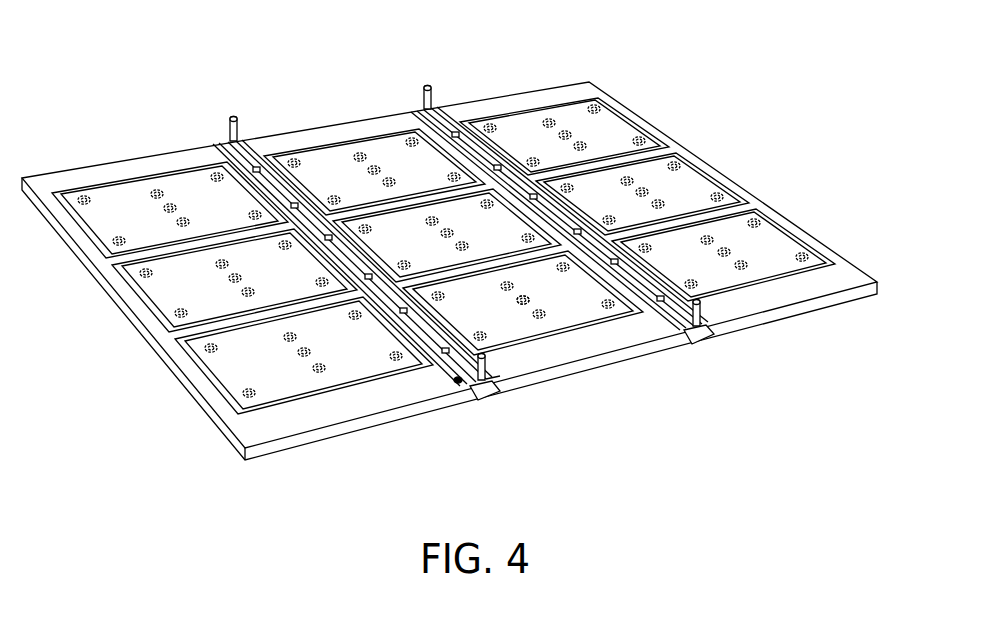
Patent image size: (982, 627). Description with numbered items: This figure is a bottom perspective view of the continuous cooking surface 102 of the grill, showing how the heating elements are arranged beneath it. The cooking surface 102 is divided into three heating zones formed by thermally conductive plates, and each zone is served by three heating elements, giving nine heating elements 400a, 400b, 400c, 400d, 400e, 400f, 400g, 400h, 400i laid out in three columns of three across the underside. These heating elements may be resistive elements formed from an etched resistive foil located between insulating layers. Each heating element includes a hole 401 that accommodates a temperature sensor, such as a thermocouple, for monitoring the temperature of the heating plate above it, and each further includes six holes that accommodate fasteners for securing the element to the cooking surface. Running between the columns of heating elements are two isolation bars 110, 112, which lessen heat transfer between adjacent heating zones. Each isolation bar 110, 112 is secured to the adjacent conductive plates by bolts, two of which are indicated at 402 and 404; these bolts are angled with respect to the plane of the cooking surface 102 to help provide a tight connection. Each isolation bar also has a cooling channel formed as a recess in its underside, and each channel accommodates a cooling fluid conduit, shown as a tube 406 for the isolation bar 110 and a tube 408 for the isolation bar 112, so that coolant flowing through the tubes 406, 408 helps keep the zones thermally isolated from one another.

The cooking surface 102 is at (273, 495).
The isolation bar 110 is at (487, 398).
The isolation bar 112 is at (700, 342).
The heating element 400a is at (160, 228).
The heating element 400b is at (215, 298).
The heating element 400c is at (280, 373).
The heating element 400d is at (368, 185).
The heating element 400e is at (438, 248).
The heating element 400f is at (515, 315).
The heating element 400g is at (560, 151).
The heating element 400h is at (630, 205).
The heating element 400i is at (710, 268).
The hole 401 is at (531, 292).
The bolt 402 is at (455, 382).
The bolt 404 is at (496, 373).
The tube 406 is at (241, 111).
The tube 408 is at (434, 82).